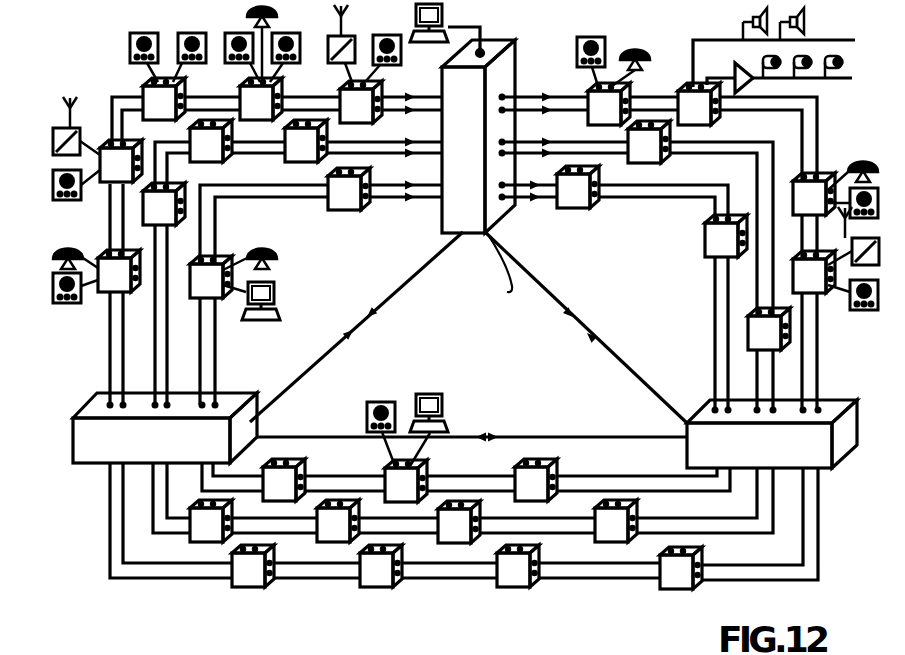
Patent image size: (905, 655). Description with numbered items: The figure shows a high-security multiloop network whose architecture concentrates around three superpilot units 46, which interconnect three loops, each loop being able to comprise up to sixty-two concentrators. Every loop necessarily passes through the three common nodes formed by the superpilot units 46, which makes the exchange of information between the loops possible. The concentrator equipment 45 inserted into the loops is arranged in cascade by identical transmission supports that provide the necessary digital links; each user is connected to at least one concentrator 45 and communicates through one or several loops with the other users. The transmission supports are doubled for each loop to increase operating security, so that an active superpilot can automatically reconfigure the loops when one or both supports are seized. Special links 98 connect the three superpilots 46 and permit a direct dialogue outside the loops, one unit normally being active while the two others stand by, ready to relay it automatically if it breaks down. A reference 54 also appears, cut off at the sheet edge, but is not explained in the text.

The concentrator equipment 45 is at (155, 98).
The superpilot unit 46 is at (442, 214).
The special link 98 is at (325, 356).
The unit (label cut off at sheet edge) 54 is at (194, 650).